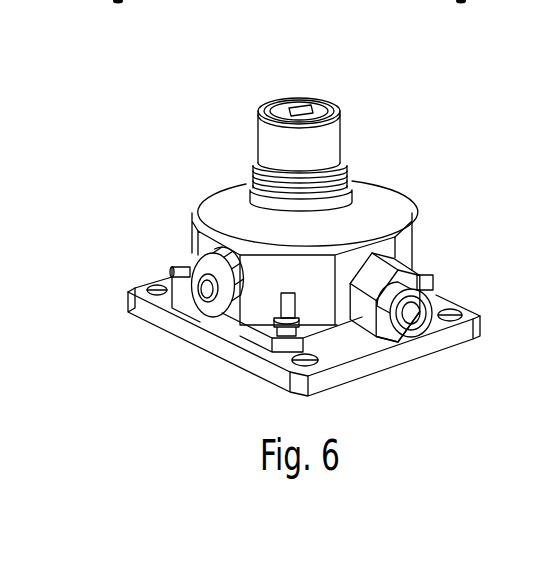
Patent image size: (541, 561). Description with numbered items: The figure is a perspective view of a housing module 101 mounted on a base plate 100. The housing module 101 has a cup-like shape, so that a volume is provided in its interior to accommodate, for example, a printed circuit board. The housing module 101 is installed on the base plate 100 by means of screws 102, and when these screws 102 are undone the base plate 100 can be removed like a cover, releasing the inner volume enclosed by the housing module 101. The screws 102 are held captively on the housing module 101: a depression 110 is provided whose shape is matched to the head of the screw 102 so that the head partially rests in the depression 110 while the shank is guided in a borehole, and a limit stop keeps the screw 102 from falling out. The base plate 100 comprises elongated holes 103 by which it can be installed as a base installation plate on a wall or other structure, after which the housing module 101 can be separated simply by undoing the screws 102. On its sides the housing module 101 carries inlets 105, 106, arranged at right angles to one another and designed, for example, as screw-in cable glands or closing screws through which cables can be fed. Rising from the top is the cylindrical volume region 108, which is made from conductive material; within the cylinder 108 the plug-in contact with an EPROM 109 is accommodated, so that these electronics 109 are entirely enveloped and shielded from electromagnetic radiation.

The base plate 100 is at (465, 330).
The housing module 101 is at (392, 205).
The screws 102 is at (288, 333).
The elongated holes 103 is at (152, 284).
The inlet 105 is at (392, 274).
The inlet 106 is at (213, 316).
The cylindrical volume region 108 is at (328, 138).
The plug-in contact with EPROM 109 is at (300, 93).
The depression 110 is at (288, 305).